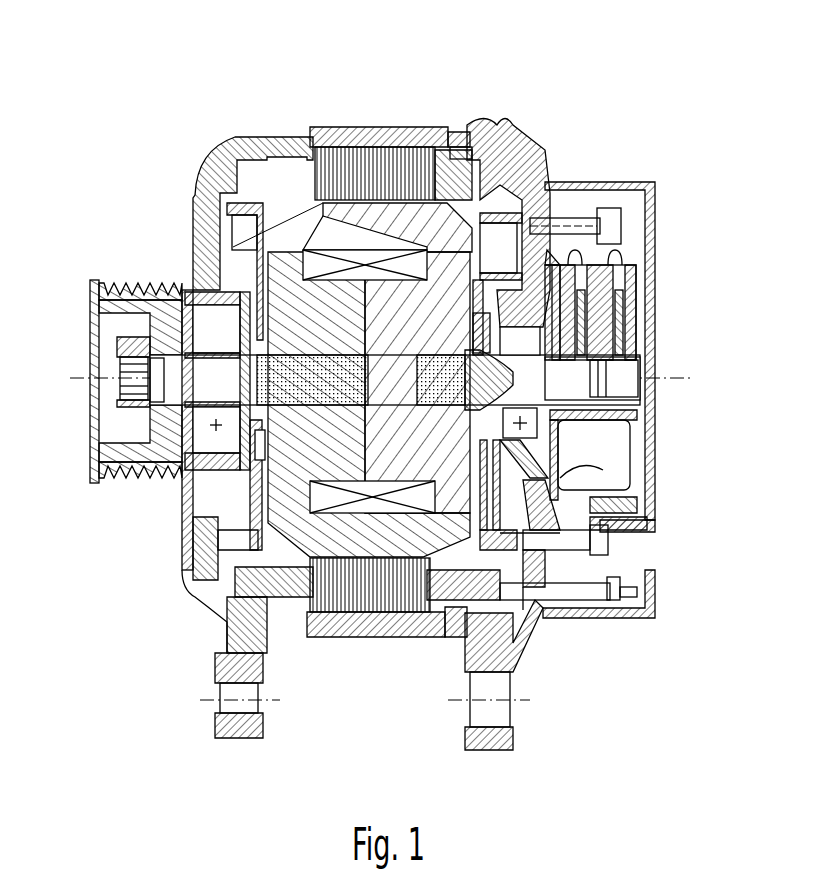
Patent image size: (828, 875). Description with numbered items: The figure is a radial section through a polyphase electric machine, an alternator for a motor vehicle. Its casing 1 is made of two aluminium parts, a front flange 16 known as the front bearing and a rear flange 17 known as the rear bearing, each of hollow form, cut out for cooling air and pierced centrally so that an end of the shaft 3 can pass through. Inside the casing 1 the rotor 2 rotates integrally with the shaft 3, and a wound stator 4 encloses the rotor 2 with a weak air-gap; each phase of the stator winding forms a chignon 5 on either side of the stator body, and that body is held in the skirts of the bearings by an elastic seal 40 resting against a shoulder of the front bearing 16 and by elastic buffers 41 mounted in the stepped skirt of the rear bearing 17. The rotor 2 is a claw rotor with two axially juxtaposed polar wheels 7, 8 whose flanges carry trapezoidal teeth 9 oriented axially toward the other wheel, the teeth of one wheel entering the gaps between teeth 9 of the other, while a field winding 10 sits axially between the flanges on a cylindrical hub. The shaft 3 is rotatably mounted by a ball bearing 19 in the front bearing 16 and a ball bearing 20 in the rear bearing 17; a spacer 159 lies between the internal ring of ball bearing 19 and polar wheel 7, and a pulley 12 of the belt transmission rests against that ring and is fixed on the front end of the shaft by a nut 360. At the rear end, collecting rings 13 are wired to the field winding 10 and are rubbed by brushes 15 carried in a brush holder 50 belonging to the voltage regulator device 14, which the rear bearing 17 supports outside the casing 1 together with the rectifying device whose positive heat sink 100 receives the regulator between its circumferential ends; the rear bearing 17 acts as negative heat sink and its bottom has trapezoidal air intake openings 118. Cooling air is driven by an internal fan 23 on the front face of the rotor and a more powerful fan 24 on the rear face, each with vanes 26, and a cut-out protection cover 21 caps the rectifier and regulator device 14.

The casing 1 is at (376, 406).
The rotor 2 is at (370, 318).
The shaft 3 is at (395, 380).
The wound stator 4 is at (387, 349).
The chignon 5 is at (468, 190).
The polar wheel 7 is at (369, 404).
The polar wheel 8 is at (417, 382).
The teeth 9 is at (387, 226).
The field winding 10 is at (293, 245).
The pulley 12 is at (92, 330).
The collecting rings 13 is at (707, 430).
The voltage regulator device 14 is at (639, 306).
The brushes 15 is at (640, 353).
The front flange 16 is at (200, 195).
The rear flange 17 is at (545, 287).
The ball bearing 19 is at (217, 381).
The ball bearing 20 is at (520, 382).
The protection cover 21 is at (656, 490).
The fan 23 is at (212, 172).
The fan 24 is at (497, 214).
The vanes 26 is at (235, 248).
The elastic seal 40 is at (310, 128).
The elastic buffers 41 is at (436, 138).
The brush holder 50 is at (655, 325).
The positive heat sink 100 is at (565, 520).
The air intake opening 118 is at (580, 210).
The spacer 159 is at (257, 425).
The nut 360 is at (128, 437).